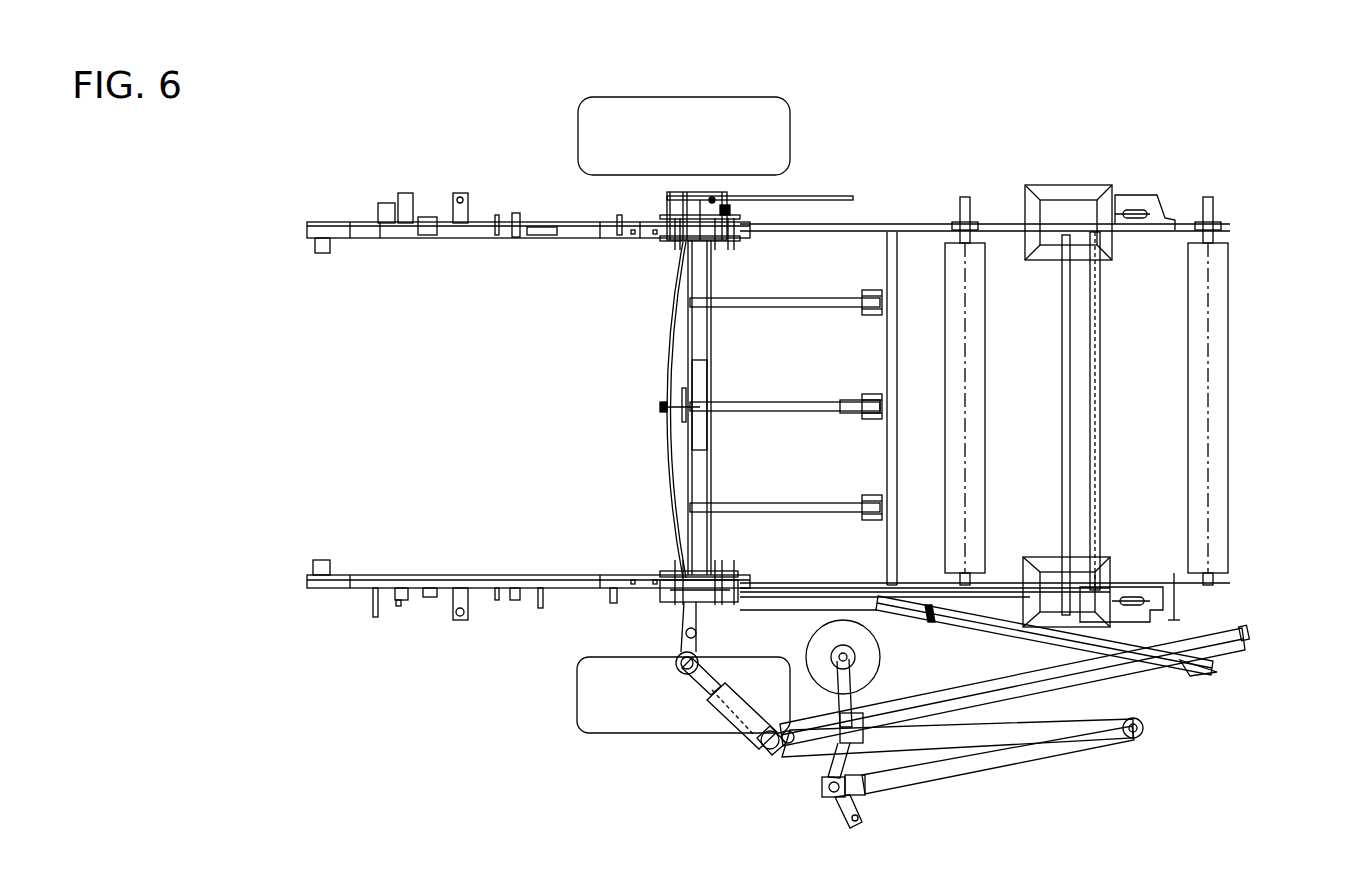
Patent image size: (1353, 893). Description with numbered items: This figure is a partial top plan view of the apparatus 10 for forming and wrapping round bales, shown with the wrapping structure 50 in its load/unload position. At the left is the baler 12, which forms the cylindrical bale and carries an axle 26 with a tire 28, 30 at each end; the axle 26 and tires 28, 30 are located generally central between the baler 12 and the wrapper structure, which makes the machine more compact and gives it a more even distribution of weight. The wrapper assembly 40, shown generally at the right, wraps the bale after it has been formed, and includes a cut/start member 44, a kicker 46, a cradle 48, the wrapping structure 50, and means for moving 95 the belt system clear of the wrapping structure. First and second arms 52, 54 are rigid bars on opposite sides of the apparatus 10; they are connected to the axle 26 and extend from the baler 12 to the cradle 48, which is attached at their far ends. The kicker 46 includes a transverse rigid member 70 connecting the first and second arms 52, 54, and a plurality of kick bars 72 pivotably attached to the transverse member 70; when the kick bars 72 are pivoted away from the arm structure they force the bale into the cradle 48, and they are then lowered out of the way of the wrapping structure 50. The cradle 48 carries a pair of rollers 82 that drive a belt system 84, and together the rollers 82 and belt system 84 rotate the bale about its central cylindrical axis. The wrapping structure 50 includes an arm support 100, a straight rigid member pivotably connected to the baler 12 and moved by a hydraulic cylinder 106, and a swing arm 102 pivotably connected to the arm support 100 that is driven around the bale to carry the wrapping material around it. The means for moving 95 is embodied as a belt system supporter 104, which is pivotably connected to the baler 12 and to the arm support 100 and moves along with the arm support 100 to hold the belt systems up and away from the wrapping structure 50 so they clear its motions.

The apparatus 10 is at (345, 168).
The baler 12 is at (538, 212).
The axle 26 is at (690, 492).
The tire 28 is at (604, 724).
The tire 30 is at (717, 108).
The wrapper assembly 40 is at (1088, 150).
The cut/start member 44 is at (793, 197).
The kicker 46 is at (875, 233).
The cradle 48 is at (1003, 203).
The wrapping structure 50 is at (975, 790).
The first arm 52 is at (858, 215).
The second arm 54 is at (810, 592).
The transverse rigid member 70 is at (885, 372).
The kick bars 72 is at (752, 300).
The rollers 82 is at (955, 390).
The belt system 84 is at (1034, 437).
The means for moving 95 is at (1272, 652).
The arm support 100 is at (1018, 735).
The swing arm 102 is at (1020, 760).
The belt system supporter 104 is at (1133, 670).
The hydraulic cylinder 106 is at (730, 708).